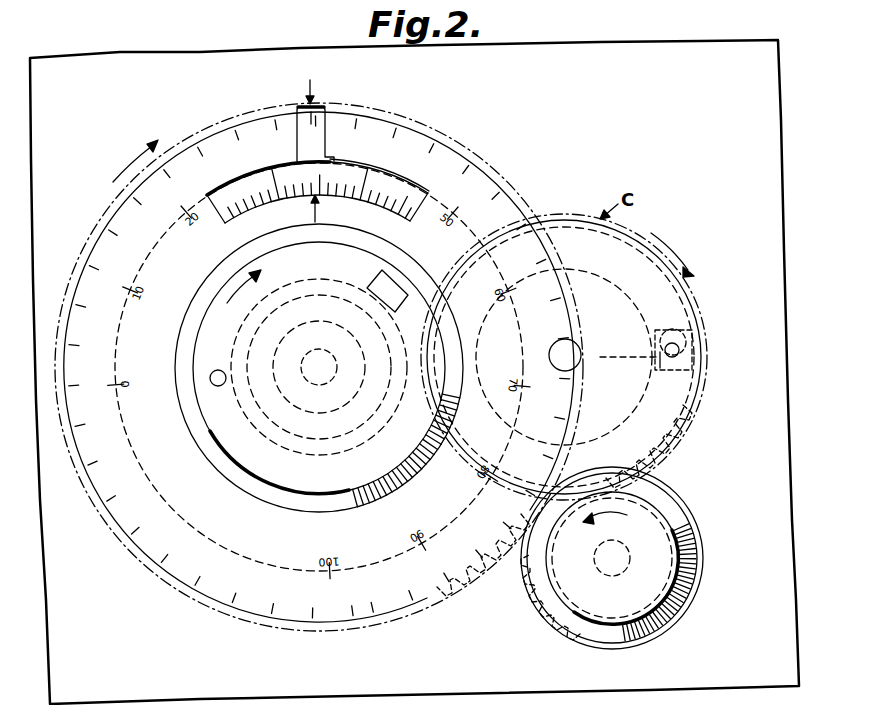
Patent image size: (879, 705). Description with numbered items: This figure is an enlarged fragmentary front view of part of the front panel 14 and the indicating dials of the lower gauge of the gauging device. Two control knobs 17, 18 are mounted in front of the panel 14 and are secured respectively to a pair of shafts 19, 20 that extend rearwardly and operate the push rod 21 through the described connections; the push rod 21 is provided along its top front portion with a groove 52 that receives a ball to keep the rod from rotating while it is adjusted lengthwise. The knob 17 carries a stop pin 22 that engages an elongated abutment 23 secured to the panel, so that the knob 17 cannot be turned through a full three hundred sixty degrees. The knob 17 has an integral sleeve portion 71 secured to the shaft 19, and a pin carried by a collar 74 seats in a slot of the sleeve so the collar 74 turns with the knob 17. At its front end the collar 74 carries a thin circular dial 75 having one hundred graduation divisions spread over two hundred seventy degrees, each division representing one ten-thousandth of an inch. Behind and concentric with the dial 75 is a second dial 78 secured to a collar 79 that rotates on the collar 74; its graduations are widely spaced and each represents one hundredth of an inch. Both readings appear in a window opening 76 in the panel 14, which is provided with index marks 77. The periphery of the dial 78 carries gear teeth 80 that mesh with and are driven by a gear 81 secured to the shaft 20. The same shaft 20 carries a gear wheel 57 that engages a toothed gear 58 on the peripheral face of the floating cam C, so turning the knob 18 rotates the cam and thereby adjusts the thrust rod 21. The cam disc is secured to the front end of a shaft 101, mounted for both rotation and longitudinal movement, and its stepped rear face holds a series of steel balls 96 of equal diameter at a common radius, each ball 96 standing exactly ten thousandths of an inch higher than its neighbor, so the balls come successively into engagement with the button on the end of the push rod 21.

The panel 14 is at (575, 48).
The control knob 17 is at (205, 330).
The control knob 18 is at (698, 563).
The shaft 19 is at (303, 369).
The shaft 20 is at (611, 576).
The push rod 21 is at (666, 330).
The stop pin 22 is at (218, 386).
The elongated abutment 23 is at (367, 288).
The groove 52 is at (693, 340).
The gear wheel 57 is at (690, 509).
The toothed gear 58 is at (672, 462).
The sleeve portion 71 is at (364, 369).
The collar 74 is at (278, 418).
The circular dial 75 is at (385, 178).
The window opening 76 is at (357, 160).
The index marks 77 is at (305, 80).
The second dial 78 is at (324, 122).
The collar 79 is at (346, 446).
The gear teeth 80 is at (468, 602).
The gear 81 is at (537, 604).
The steel ball 96 is at (658, 357).
The shaft 101 is at (557, 340).